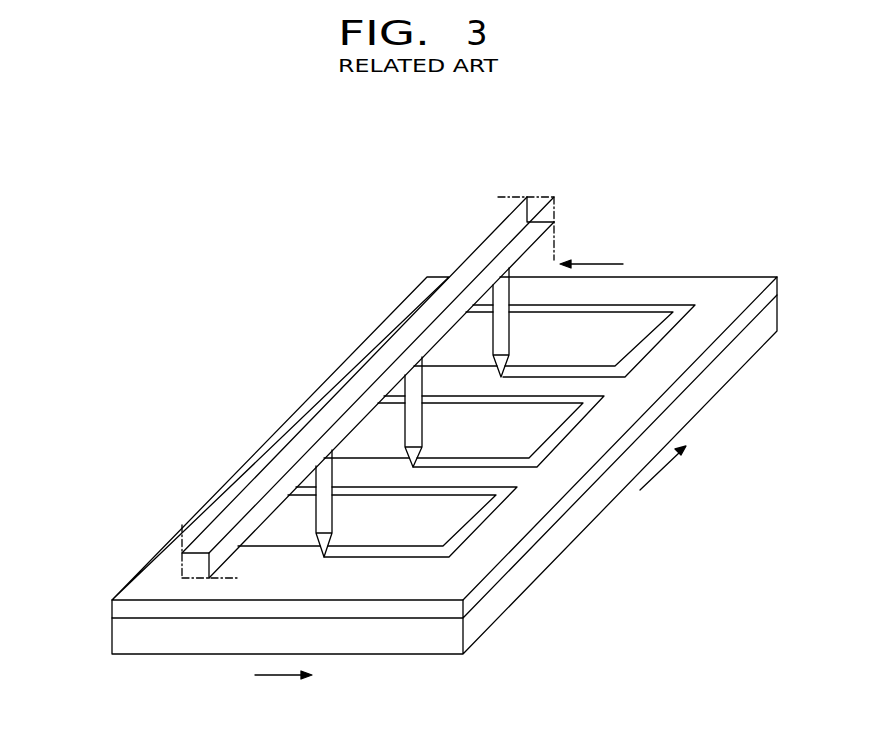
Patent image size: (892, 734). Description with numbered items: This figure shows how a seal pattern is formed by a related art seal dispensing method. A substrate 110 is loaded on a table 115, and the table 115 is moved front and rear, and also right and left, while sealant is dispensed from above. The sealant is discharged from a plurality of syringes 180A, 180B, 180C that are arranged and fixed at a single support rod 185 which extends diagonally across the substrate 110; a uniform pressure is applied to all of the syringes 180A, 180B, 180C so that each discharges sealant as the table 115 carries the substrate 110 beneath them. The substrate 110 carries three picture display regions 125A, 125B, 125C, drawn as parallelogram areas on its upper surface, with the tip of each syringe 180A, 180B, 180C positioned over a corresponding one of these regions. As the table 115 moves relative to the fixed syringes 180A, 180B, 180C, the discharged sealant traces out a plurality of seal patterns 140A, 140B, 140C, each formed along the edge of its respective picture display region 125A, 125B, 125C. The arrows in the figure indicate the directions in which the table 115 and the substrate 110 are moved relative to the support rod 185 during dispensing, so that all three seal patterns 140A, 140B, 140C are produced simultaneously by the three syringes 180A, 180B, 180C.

The substrate 110 is at (120, 607).
The table 115 is at (120, 640).
The picture display region 125A is at (642, 326).
The picture display region 125B is at (555, 415).
The picture display region 125C is at (465, 507).
The seal pattern 140A is at (637, 362).
The seal pattern 140B is at (552, 452).
The seal pattern 140C is at (465, 537).
The syringe 180A is at (497, 302).
The syringe 180B is at (407, 384).
The syringe 180C is at (318, 470).
The support rod 185 is at (504, 238).